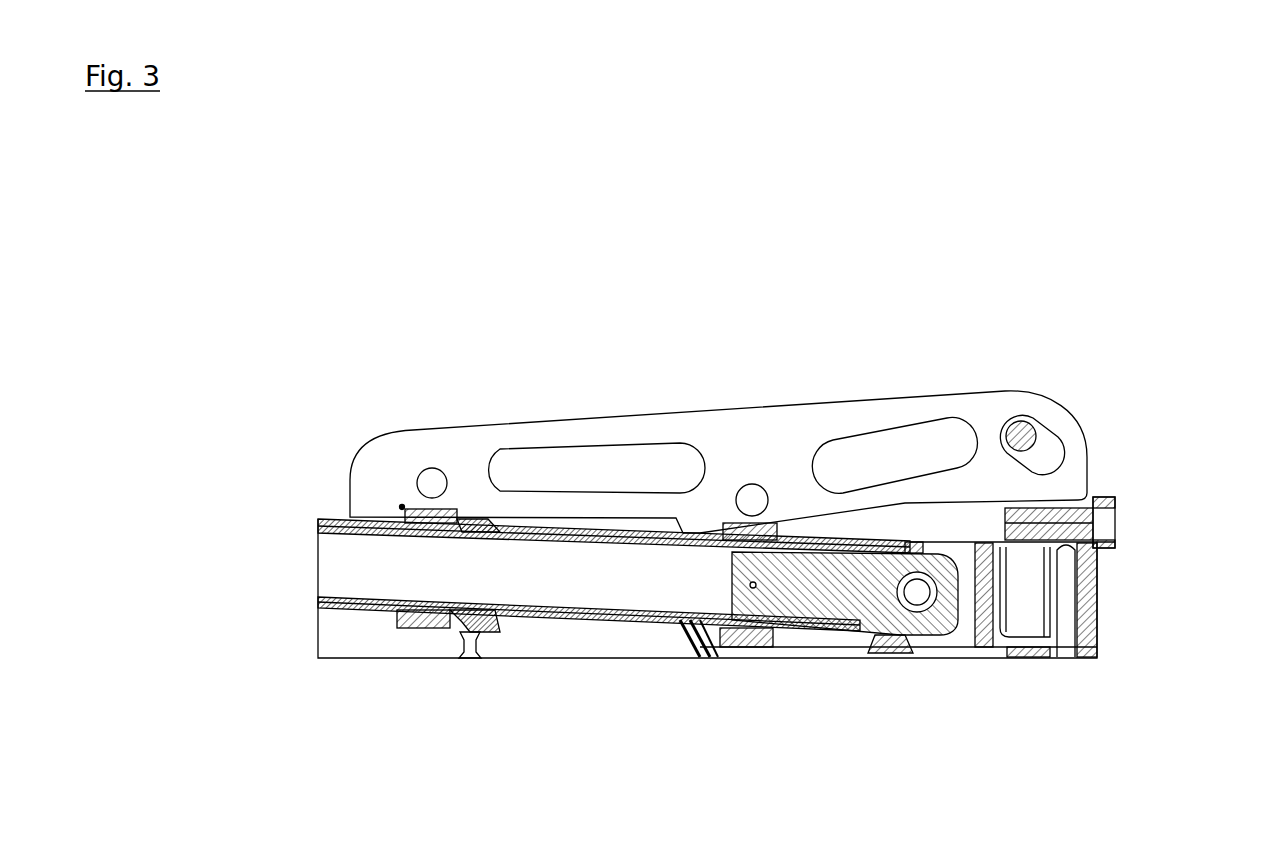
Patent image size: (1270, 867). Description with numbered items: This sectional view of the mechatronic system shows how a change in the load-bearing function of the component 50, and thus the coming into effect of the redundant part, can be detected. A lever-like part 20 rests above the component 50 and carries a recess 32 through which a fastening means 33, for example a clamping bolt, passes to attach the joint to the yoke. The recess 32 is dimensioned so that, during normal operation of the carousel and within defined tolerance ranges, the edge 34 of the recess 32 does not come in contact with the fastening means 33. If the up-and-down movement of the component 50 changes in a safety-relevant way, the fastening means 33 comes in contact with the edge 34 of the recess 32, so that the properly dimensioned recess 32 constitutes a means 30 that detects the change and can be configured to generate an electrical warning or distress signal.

The lever 20 is at (713, 323).
The means 30 is at (1130, 393).
The recess 32 is at (1047, 457).
The fastening means 33 is at (1073, 353).
The edge 34 is at (1020, 433).
The component 50 is at (450, 573).